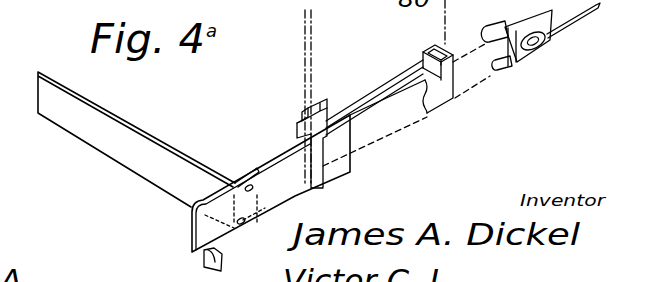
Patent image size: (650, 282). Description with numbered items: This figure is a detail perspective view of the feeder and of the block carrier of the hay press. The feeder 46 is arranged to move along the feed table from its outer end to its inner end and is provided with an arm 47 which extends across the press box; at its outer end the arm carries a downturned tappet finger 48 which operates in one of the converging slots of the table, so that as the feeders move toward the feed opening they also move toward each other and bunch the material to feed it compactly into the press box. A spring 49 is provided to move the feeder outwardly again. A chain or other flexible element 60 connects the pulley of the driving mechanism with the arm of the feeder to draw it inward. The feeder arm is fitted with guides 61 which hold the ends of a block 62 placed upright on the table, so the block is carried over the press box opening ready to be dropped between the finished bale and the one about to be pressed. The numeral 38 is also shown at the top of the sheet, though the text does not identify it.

The frame member 38 is at (58, 8).
The feeder 46 is at (390, 134).
The arm 47 is at (168, 167).
The tappet finger 48 is at (214, 257).
The spring 49 is at (508, 70).
The flexible element 60 is at (590, 15).
The guide 61 is at (350, 103).
The block 62 is at (326, 115).